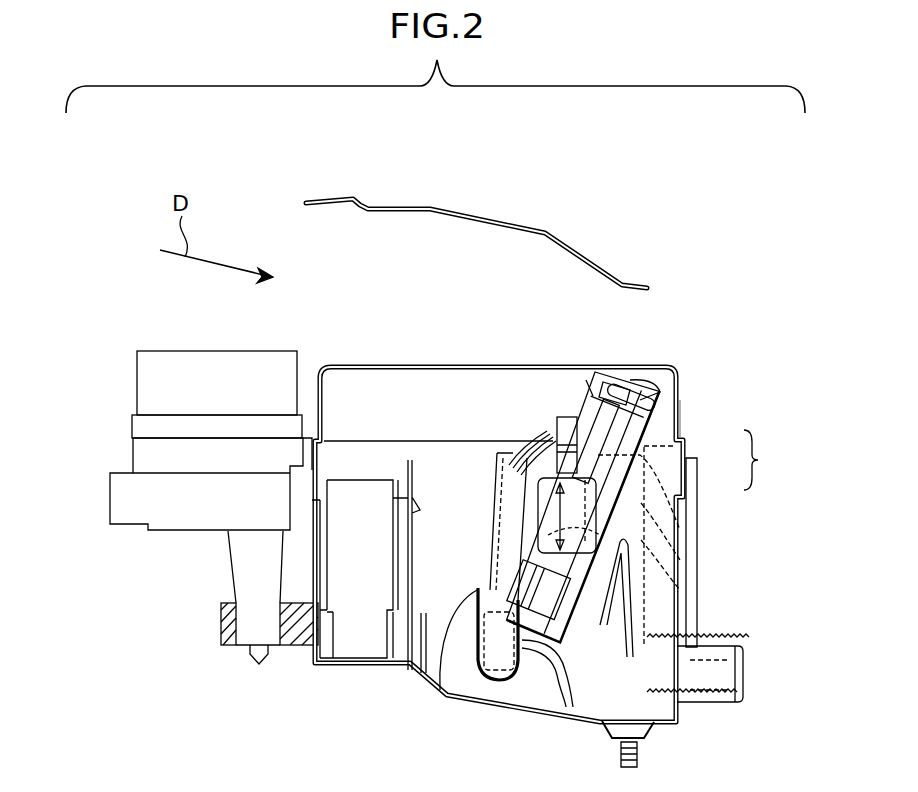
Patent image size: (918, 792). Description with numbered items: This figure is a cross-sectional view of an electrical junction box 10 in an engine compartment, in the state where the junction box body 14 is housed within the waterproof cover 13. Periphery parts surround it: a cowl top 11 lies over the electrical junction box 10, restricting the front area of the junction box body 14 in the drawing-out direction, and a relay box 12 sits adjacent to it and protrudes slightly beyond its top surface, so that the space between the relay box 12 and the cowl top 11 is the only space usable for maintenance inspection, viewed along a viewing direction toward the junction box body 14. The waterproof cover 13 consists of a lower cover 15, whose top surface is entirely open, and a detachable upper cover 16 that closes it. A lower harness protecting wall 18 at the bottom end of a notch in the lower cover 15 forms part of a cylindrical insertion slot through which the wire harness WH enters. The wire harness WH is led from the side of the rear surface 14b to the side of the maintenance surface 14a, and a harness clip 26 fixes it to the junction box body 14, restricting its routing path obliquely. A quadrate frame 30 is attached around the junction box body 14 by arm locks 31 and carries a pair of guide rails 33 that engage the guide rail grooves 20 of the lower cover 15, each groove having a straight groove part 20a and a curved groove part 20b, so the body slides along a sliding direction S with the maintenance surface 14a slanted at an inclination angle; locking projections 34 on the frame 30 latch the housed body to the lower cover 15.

The electrical junction box 10 is at (735, 414).
The cowl top 11 is at (508, 222).
The relay box 12 is at (154, 384).
The waterproof cover 13 is at (765, 460).
The junction box body 14 is at (677, 390).
The maintenance surface 14a is at (590, 382).
The rear surface 14b is at (480, 697).
The lower cover 15 is at (680, 503).
The upper cover 16 is at (678, 418).
The lower harness protecting wall 18 is at (706, 700).
The guide rail groove 20 is at (682, 560).
The straight groove part 20a is at (682, 590).
The curved groove part 20b is at (682, 530).
The harness clip 26 is at (434, 692).
The frame 30 is at (612, 390).
The arm lock 31 is at (657, 400).
The guide rail 33 is at (512, 455).
The locking projection 34 is at (557, 414).
The sliding direction S is at (553, 508).
The wire harness WH is at (573, 672).